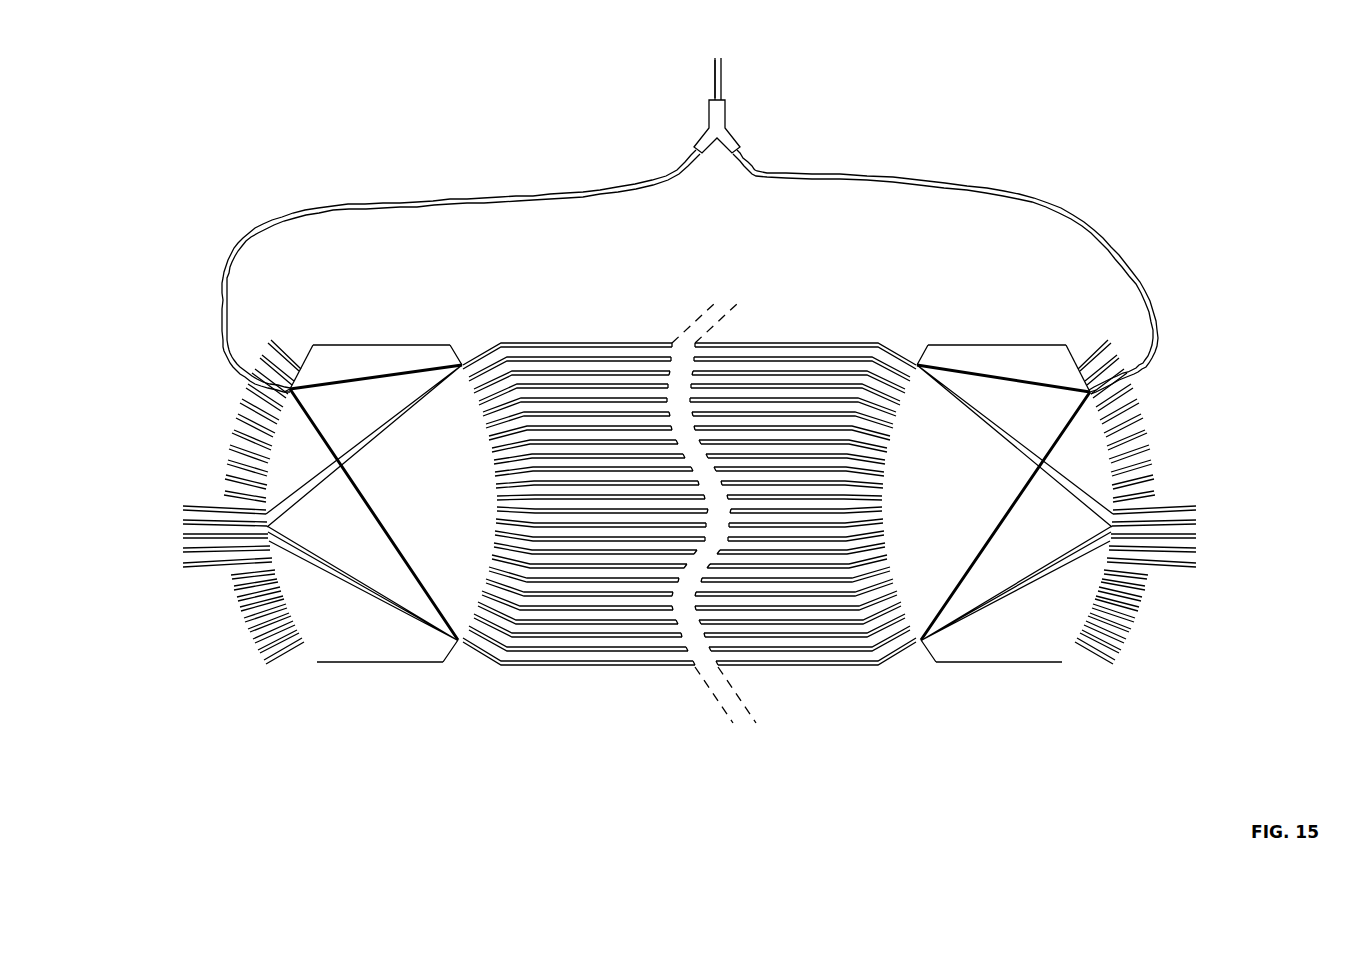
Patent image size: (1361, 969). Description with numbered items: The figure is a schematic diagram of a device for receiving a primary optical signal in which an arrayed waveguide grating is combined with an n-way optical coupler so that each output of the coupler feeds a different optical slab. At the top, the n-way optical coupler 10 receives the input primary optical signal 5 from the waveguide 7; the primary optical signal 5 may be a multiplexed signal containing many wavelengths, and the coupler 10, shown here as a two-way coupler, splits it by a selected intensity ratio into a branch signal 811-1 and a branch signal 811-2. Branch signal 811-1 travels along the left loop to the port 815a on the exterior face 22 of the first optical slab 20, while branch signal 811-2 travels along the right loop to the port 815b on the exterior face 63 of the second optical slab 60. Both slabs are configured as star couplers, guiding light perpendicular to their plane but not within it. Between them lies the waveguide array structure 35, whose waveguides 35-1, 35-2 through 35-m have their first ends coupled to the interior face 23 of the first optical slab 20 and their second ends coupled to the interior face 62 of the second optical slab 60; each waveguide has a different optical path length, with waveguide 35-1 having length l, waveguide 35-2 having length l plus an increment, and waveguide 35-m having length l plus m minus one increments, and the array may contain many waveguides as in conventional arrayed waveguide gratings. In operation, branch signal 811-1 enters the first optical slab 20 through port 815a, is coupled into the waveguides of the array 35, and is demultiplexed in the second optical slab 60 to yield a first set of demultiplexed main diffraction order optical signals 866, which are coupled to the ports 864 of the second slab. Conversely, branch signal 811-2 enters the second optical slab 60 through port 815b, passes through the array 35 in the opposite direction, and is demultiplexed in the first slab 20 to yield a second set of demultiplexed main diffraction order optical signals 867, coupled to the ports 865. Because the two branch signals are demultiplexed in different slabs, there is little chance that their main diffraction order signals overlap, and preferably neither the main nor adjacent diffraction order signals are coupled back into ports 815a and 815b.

The primary optical signal 5 is at (733, 57).
The waveguide 7 is at (709, 73).
The n-way optical coupler 10 is at (725, 154).
The branch signal 811-1 is at (500, 183).
The branch signal 811-2 is at (876, 164).
The first optical slab 20 is at (348, 670).
The exterior face 22 is at (315, 348).
The interior face 23 is at (443, 352).
The port 815a is at (290, 395).
The ports 865 is at (178, 572).
The demultiplexed main diffraction order optical signals 867 is at (326, 487).
The second optical slab 60 is at (1000, 670).
The interior face 62 is at (934, 348).
The exterior face 63 is at (1060, 353).
The port 815b is at (1090, 398).
The ports 864 is at (1203, 572).
The demultiplexed main diffraction order optical signals 866 is at (1053, 487).
The waveguide array structure 35 is at (685, 707).
The waveguide 35-1 is at (537, 342).
The waveguide 35-2 is at (580, 354).
The waveguide 35-m is at (537, 670).